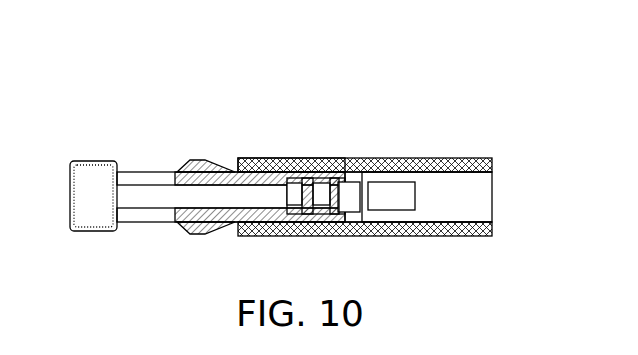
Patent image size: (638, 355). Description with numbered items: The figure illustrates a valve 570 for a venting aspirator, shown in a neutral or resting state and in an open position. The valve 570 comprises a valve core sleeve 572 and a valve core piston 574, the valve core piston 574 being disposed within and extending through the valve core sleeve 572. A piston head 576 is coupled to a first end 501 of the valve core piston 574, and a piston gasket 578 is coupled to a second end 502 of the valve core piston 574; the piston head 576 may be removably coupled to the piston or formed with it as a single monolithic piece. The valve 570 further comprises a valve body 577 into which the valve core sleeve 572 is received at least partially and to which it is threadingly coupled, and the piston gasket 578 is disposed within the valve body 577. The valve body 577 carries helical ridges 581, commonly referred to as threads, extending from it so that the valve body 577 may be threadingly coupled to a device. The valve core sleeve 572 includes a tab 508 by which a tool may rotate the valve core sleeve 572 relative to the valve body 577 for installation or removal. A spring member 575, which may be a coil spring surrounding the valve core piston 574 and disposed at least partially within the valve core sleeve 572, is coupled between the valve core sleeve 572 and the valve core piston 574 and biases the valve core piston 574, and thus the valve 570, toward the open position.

The valve 570 is at (334, 90).
The piston head 576 is at (100, 161).
The tab 508 is at (193, 158).
The valve core sleeve 572 is at (226, 170).
The valve core piston 574 is at (270, 160).
The piston gasket 578 is at (358, 175).
The valve body 577 is at (473, 163).
The helical ridges 581 is at (487, 163).
The second end 502 is at (405, 197).
The first end 501 is at (134, 204).
The spring member 575 is at (327, 188).